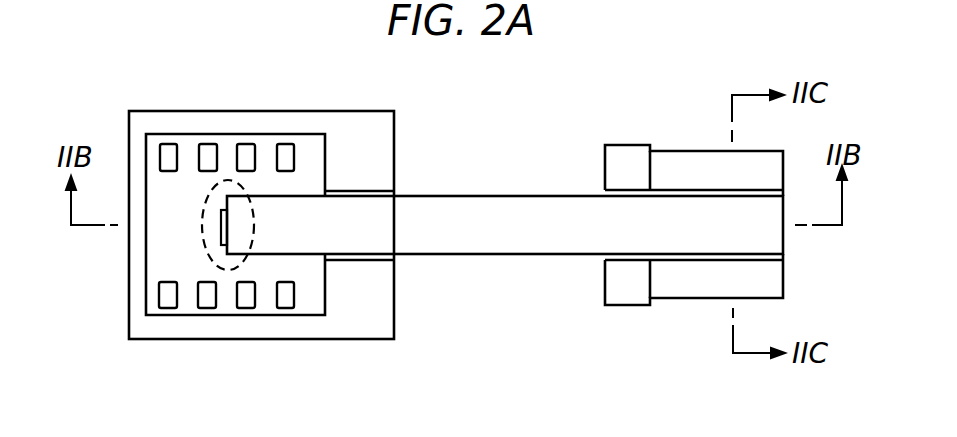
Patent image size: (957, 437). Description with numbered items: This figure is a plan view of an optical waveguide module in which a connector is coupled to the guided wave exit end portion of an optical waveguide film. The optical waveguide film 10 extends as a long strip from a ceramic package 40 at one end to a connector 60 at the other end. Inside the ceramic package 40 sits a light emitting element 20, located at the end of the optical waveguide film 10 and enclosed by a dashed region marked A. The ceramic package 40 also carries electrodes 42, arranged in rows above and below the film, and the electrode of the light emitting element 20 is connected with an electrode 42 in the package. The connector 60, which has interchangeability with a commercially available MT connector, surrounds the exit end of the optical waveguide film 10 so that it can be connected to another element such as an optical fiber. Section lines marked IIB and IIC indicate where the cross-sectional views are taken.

The optical waveguide film 10 is at (496, 207).
The light emitting element 20 is at (220, 227).
The ceramic package 40 is at (358, 336).
The electrode 42 is at (166, 308).
The connector 60 is at (685, 157).
The region A is at (203, 202).